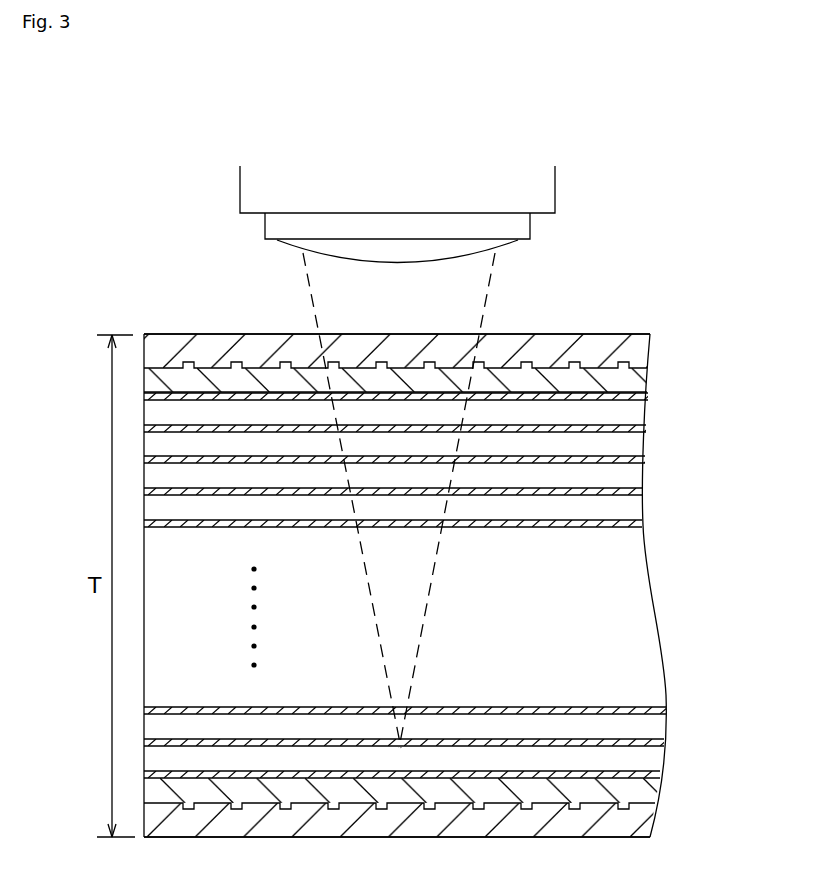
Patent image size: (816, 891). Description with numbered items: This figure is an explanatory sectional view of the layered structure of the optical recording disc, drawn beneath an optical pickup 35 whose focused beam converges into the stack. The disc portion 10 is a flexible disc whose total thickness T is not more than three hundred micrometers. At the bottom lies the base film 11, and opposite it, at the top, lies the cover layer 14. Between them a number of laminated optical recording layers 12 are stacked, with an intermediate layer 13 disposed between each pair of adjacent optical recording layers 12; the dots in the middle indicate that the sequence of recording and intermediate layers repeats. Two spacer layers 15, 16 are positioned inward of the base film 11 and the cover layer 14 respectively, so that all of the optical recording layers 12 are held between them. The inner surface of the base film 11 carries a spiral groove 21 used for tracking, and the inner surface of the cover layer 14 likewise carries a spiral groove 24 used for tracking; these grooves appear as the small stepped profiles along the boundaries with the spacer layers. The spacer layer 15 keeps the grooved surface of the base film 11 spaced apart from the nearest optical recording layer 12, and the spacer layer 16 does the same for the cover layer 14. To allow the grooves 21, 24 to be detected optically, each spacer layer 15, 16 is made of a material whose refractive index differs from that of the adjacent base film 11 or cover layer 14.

The disc portion 10 is at (438, 557).
The base film 11 is at (648, 818).
The optical recording layers 12 is at (638, 395).
The intermediate layers 13 is at (633, 475).
The cover layer 14 is at (638, 351).
The spacer layer 15 is at (655, 788).
The spacer layer 16 is at (637, 382).
The spiral groove 21 is at (283, 808).
The spiral groove 24 is at (237, 362).
The optical pickup 35 is at (555, 182).